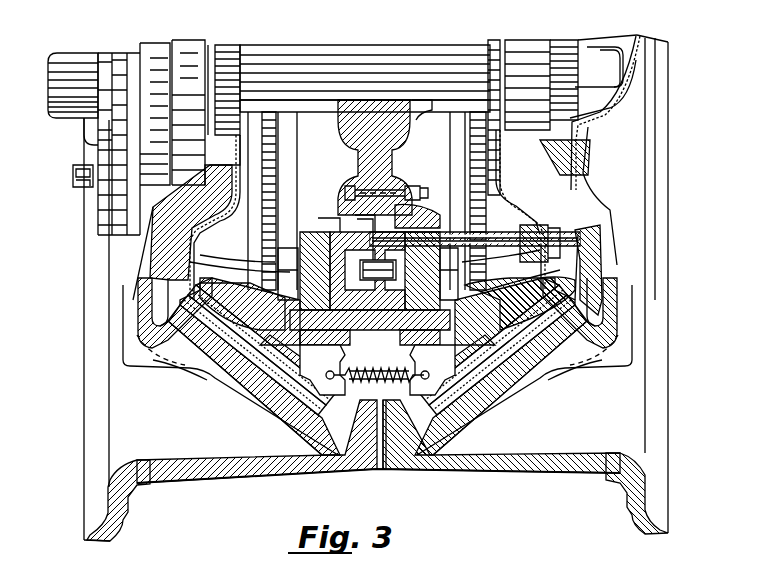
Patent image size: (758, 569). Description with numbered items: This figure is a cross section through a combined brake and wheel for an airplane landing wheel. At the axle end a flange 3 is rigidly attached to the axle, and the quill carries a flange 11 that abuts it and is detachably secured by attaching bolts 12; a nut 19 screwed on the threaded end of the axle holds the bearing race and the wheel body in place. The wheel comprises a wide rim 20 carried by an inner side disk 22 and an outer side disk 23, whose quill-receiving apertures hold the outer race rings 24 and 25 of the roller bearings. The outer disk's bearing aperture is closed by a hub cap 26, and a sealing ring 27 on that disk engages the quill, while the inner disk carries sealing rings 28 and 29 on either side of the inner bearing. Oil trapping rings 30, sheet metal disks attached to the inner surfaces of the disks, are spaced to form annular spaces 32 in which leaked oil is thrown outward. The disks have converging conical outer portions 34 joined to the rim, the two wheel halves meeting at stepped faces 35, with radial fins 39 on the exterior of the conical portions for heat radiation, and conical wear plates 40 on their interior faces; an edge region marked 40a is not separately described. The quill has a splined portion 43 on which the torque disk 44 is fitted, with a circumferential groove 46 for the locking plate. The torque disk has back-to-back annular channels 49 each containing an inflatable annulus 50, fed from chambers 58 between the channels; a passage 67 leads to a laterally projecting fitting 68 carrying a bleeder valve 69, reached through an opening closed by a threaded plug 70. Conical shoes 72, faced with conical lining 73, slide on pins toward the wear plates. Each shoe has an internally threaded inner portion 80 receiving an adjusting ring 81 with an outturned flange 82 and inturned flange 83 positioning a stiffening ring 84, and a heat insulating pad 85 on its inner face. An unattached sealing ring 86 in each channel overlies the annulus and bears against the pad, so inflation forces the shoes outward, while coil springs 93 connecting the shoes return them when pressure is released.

The flange 3 is at (92, 145).
The flange 11 is at (120, 240).
The attaching bolts 12 is at (70, 190).
The nut 19 is at (605, 45).
The rim 20 is at (318, 470).
The inner side disk 22 is at (172, 312).
The outer side disk 23 is at (612, 300).
The outer race ring 24 is at (192, 48).
The outer race ring 25 is at (538, 38).
The hub cap 26 is at (646, 52).
The sealing ring 27 is at (500, 35).
The sealing ring 28 is at (230, 47).
The sealing ring 29 is at (152, 45).
The oil trapping rings 30 is at (240, 170).
The annular spaces 32 is at (205, 210).
The conical outer portions 34 is at (178, 372).
The stepped faces 35 is at (388, 470).
The radial fins 39 is at (195, 382).
The conical wear plates 40 is at (250, 400).
The conical plate edge 40a is at (318, 428).
The splined portion 43 is at (365, 78).
The torque disk 44 is at (395, 168).
The circumferential groove 46 is at (420, 110).
The annular channels 49 is at (315, 240).
The inflatable annulus 50 is at (310, 262).
The chambers 58 is at (333, 255).
The passage 67 is at (420, 225).
The fitting 68 is at (500, 230).
The bleeder valve 69 is at (537, 262).
The threaded plug 70 is at (605, 228).
The conical shoes 72 is at (250, 390).
The conical lining 73 is at (318, 385).
The internally threaded inner portion 80 is at (262, 392).
The adjusting ring 81 is at (270, 296).
The outturned flange 82 is at (268, 340).
The inturned flange 83 is at (250, 272).
The stiffening ring 84 is at (285, 285).
The heat insulating pad 85 is at (298, 278).
The sealing ring 86 is at (418, 210).
The coil springs 93 is at (405, 385).